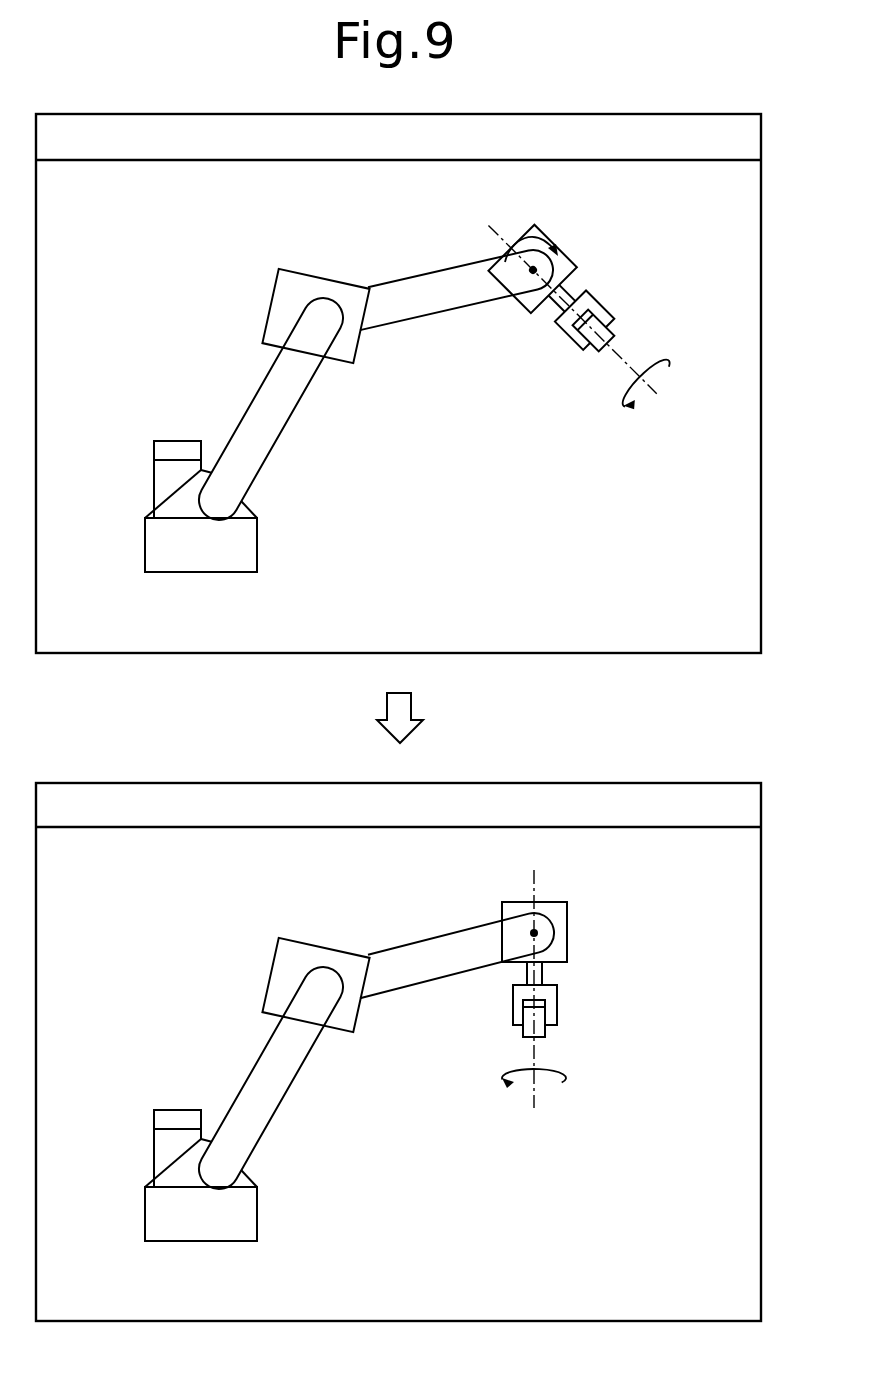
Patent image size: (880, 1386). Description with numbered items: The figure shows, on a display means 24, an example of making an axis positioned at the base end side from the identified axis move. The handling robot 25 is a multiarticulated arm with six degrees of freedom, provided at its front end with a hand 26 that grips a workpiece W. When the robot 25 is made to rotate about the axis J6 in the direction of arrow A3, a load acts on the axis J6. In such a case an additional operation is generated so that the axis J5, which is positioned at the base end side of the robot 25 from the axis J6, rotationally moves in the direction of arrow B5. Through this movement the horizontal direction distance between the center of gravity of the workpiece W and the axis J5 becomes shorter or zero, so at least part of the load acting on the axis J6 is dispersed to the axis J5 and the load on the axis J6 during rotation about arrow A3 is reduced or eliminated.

The display means 24 is at (761, 241).
The handling robot 25 is at (208, 285).
The hand 26 is at (600, 302).
The workpiece W is at (626, 336).
The axis J5 is at (533, 270).
The axis J6 is at (614, 364).
The arrow A3 is at (668, 363).
The arrow B5 is at (545, 231).